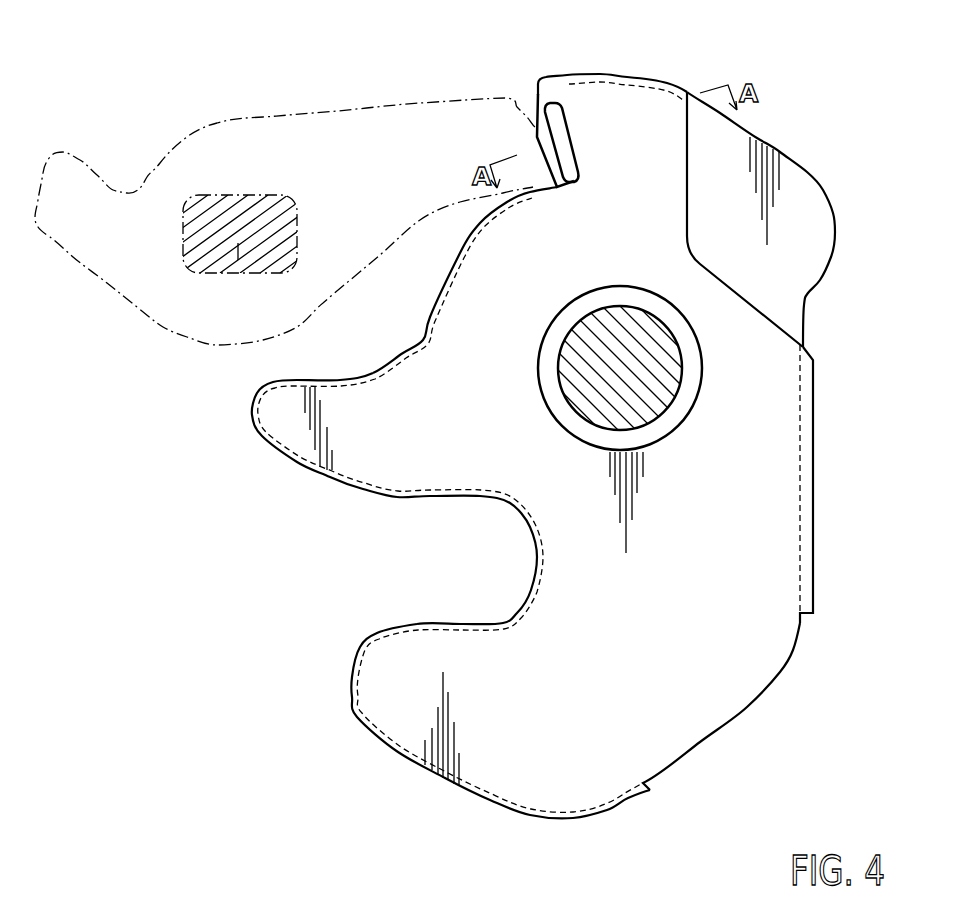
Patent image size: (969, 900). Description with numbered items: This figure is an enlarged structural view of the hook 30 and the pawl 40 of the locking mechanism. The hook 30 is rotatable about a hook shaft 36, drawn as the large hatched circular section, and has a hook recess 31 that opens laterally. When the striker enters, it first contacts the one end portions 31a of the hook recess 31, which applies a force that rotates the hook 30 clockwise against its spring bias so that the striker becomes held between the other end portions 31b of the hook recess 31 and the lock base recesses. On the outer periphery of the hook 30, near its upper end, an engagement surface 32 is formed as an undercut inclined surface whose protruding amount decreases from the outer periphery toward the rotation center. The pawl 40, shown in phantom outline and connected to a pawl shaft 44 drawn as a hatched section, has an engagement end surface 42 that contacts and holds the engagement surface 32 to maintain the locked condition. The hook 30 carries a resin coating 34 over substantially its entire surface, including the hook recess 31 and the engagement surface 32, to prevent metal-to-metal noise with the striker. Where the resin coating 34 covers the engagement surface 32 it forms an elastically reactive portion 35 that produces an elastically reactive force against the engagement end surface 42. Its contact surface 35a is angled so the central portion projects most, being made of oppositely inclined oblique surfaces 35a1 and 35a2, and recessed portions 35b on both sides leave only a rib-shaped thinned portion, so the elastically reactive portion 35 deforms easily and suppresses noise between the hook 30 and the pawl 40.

The hook 30 is at (824, 329).
The hook recess 31 is at (507, 513).
The one end portions of the hook recess 31a is at (290, 417).
The other end portions of the hook recess 31b is at (390, 680).
The engagement surface 32 is at (572, 100).
The resin coating 34 is at (760, 512).
The elastically reactive portion 35 is at (534, 139).
The contact surface 35a is at (532, 154).
The oblique surface 35a1 is at (527, 106).
The oblique surface 35a2 is at (540, 176).
The recessed portions 35b is at (572, 100).
The hook shaft 36 is at (640, 370).
The pawl 40 is at (320, 118).
The engagement end surface 42 is at (531, 97).
The pawl shaft 44 is at (237, 267).